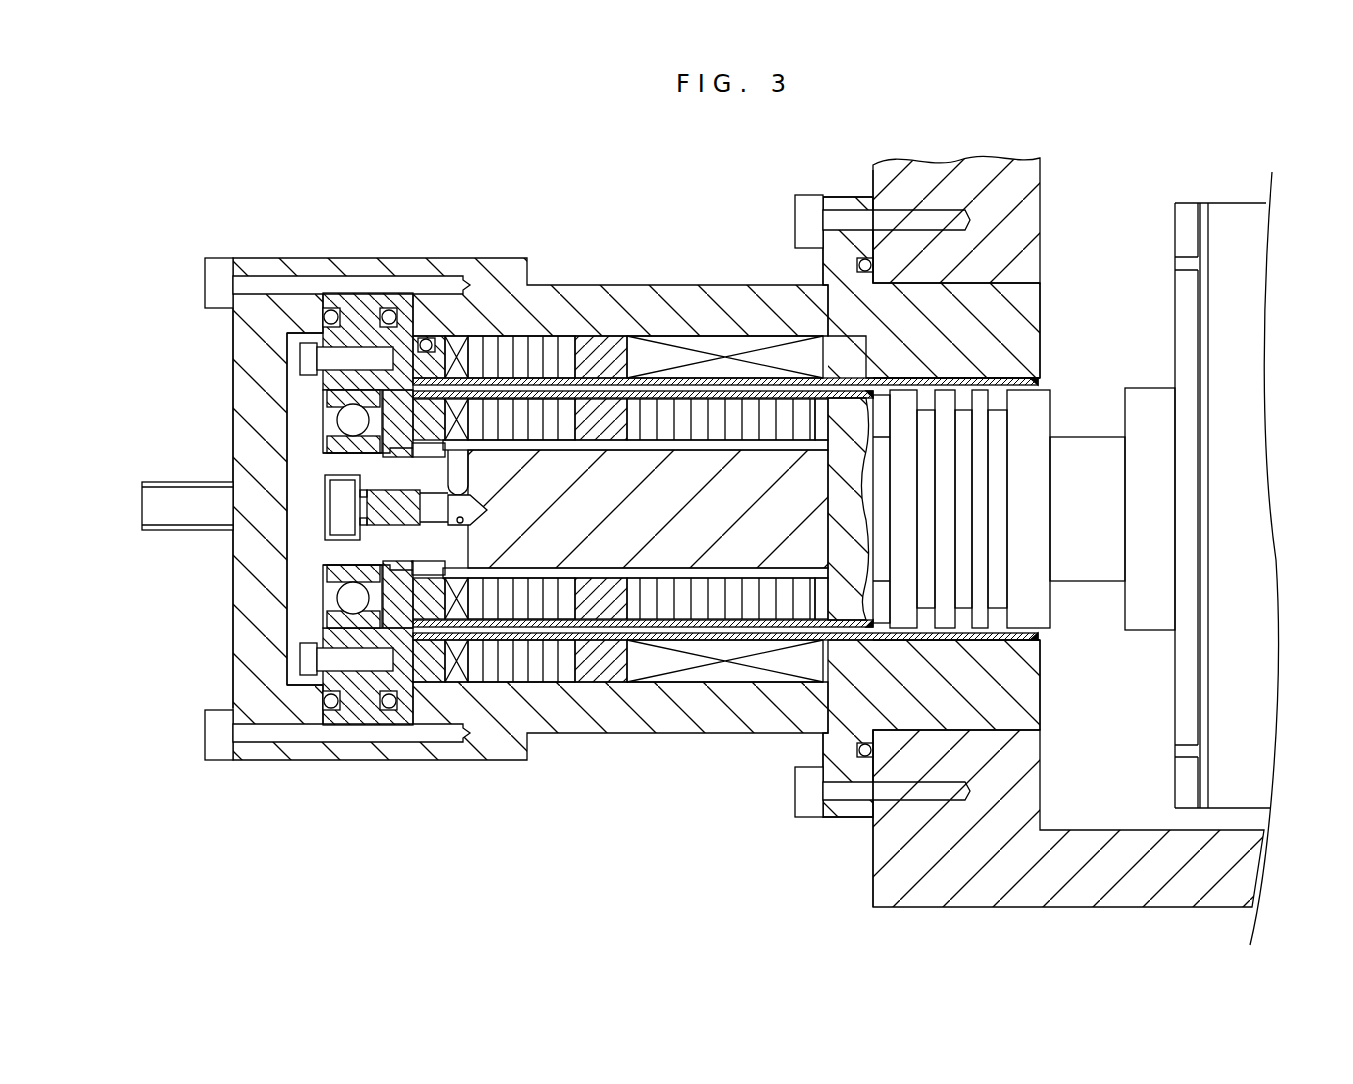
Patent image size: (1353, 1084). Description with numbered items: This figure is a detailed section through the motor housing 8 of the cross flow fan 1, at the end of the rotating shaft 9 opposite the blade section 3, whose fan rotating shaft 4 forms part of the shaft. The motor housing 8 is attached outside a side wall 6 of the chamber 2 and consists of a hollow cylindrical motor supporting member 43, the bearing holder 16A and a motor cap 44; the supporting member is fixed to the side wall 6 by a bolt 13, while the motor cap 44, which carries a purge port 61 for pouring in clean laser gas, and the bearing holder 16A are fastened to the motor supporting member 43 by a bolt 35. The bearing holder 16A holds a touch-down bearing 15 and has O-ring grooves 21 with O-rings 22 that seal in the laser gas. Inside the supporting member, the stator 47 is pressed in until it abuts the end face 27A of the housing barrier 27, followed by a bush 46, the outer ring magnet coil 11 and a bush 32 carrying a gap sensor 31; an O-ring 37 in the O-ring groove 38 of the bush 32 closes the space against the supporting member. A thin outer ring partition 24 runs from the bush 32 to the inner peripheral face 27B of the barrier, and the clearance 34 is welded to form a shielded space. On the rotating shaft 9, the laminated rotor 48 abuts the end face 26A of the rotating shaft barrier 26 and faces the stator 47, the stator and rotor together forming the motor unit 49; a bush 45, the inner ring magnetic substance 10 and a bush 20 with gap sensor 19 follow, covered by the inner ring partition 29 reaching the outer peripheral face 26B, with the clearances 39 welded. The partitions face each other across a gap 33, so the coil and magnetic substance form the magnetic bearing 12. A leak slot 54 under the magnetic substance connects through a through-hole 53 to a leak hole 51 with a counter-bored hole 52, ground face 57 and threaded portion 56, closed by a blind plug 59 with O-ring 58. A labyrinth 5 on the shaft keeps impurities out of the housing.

The cross flow fan 1 is at (1251, 526).
The chamber 2 is at (1028, 535).
The blade section 3 is at (1255, 234).
The fan rotating shaft 4 is at (1088, 445).
The rotating shaft 9 is at (1112, 500).
The labyrinth 5 is at (1048, 598).
The side wall 6 is at (870, 178).
The motor housing 8 is at (492, 451).
The inner ring magnetic substance 10 is at (556, 410).
The outer ring magnet coil 11 is at (533, 410).
The magnetic bearing 12 is at (530, 439).
The bolt 13 is at (808, 197).
The touch-down bearing 15 is at (337, 420).
The bearing holder 16A is at (365, 712).
The gap sensor 19 is at (470, 430).
The bush 20 is at (455, 492).
The O-ring groove 21 is at (352, 345).
The O-ring 22 is at (330, 312).
The outer ring partition 24 is at (934, 372).
The rotating shaft barrier 26 is at (862, 420).
The end face 26A is at (808, 432).
The outer peripheral face 26B is at (878, 352).
The housing barrier 27 is at (951, 504).
The end face 27A is at (826, 335).
The inner peripheral face 27B is at (1040, 378).
The inner ring partition 29 is at (830, 415).
The gap sensor 31 is at (436, 337).
The bush 32 is at (433, 336).
The gap 33 is at (413, 623).
The clearance 34 is at (415, 380).
The bolt 35 is at (205, 270).
The O-ring 37 is at (437, 336).
The O-ring groove 38 is at (416, 338).
The clearance 39 is at (413, 442).
The motor supporting member 43 is at (497, 258).
The motor cap 44 is at (237, 355).
The bush 45 is at (600, 440).
The bush 46 is at (610, 336).
The stator 47 is at (700, 336).
The rotor 48 is at (725, 336).
The stator winding 49 is at (725, 442).
The leak hole 51 is at (461, 526).
The counter-bored hole 52 is at (367, 492).
The through-hole 53 is at (478, 503).
The leak slot 54 is at (645, 450).
The threaded portion 56 is at (440, 497).
The ground face 57 is at (353, 483).
The O-ring 58 is at (400, 525).
The blind plug 59 is at (332, 524).
The purge port 61 is at (158, 480).